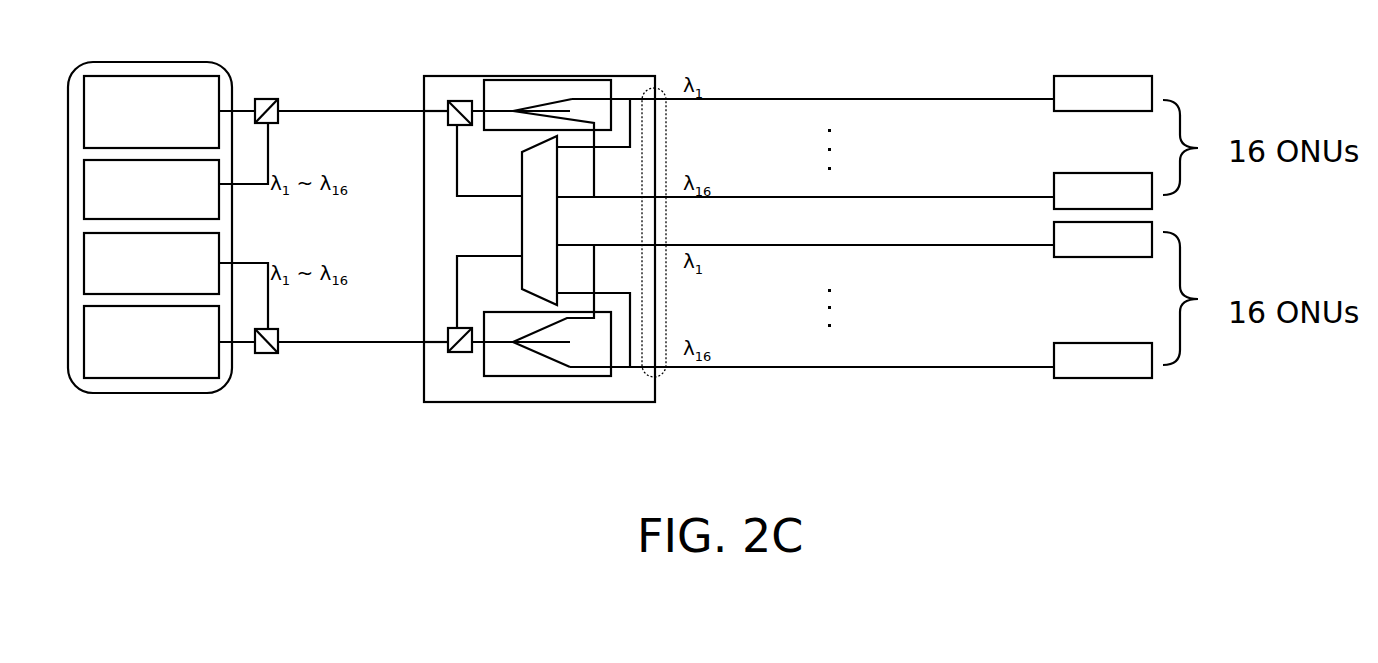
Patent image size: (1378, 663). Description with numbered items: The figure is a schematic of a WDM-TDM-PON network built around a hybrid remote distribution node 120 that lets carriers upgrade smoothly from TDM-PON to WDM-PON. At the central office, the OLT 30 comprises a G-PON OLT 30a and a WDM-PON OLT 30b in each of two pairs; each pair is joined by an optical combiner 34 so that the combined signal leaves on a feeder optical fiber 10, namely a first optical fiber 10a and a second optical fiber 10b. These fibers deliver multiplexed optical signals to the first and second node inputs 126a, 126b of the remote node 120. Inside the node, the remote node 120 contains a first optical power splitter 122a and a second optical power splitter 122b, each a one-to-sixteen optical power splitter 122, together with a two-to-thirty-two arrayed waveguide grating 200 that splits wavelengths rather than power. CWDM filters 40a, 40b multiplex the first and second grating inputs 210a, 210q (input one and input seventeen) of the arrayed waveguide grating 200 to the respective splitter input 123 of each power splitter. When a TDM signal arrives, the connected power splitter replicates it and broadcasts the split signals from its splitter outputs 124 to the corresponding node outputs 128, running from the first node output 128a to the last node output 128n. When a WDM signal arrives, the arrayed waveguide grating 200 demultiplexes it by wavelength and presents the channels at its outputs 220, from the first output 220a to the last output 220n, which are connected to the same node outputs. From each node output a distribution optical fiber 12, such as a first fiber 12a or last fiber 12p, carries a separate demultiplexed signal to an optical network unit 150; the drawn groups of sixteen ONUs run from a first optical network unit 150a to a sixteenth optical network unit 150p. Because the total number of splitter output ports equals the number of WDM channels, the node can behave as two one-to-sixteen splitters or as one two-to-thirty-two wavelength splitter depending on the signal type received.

The optical line terminal 30 is at (197, 62).
The G-PON OLT 30a is at (220, 92).
The WDM-PON OLT 30b is at (220, 200).
The optical combiner 34 is at (273, 124).
The optical fiber 10 is at (333, 212).
The first optical fiber 10a is at (316, 111).
The second optical fiber 10b is at (312, 341).
The optical network remote node 120 is at (634, 76).
The first node input 126a is at (421, 118).
The second node input 126b is at (422, 350).
The CWDM filter 40a is at (448, 101).
The CWDM filter 40b is at (448, 352).
The splitter input 123 is at (480, 108).
The optical power splitter 122 is at (549, 236).
The first optical power splitter 122a is at (567, 79).
The second optical power splitter 122b is at (545, 377).
The arrayed waveguide grating 200 is at (522, 222).
The first grating input 210a is at (457, 148).
The second grating input 210q is at (457, 268).
The splitter outputs 124 is at (662, 378).
The node outputs 128 is at (683, 248).
The first node output 128a is at (683, 113).
The last node output 128n is at (683, 382).
The arrayed waveguide grating outputs 220 is at (683, 248).
The first arrayed waveguide grating output 220a is at (674, 101).
The last arrayed waveguide grating output 220n is at (674, 368).
The optical fibers 12 is at (887, 218).
The first distribution optical fiber 12a is at (906, 100).
The last distribution optical fiber 12p is at (912, 197).
The optical network unit 150 is at (1110, 227).
The first optical network unit 150a is at (1057, 112).
The last optical network unit 150p is at (1057, 173).